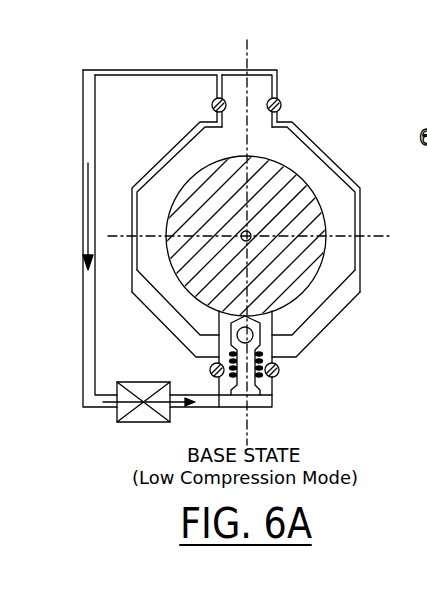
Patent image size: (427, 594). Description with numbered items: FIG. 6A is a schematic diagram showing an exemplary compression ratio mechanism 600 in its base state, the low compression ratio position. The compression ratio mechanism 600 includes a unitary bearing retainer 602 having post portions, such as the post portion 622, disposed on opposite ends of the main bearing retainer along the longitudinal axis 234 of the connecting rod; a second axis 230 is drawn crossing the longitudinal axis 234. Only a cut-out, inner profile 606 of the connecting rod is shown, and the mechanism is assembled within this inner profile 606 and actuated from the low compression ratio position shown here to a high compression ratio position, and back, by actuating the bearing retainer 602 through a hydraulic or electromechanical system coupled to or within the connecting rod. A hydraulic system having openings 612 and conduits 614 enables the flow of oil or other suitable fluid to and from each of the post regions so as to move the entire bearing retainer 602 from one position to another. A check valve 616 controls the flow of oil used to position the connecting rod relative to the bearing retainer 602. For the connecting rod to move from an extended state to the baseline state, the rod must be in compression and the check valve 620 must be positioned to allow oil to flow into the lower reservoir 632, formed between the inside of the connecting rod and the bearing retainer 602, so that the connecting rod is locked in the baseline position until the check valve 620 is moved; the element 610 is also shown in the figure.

The longitudinal axis 234 is at (248, 50).
The horizontal centerline axis 230 is at (363, 234).
The compression ratio mechanism 600 is at (361, 44).
The unitary bearing retainer 602 is at (317, 148).
The inner profile 606 is at (332, 322).
The lower reservoir 632 is at (160, 304).
The eccentric rotor 610 is at (307, 266).
The openings 612 is at (222, 72).
The conduits 614 is at (83, 128).
The check valve 616 is at (117, 413).
The post portion 622 is at (266, 388).
The check valve 620 is at (212, 105).